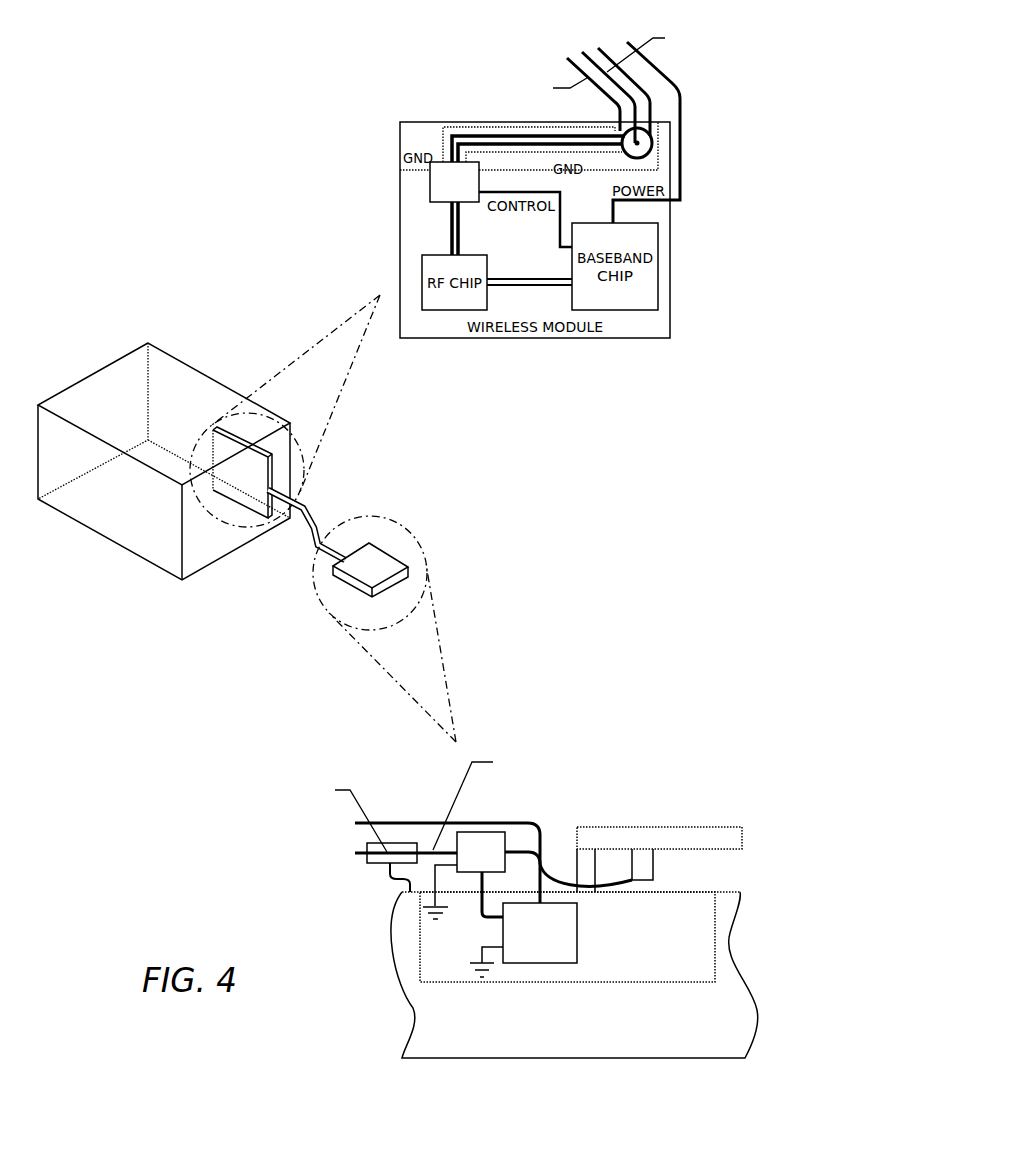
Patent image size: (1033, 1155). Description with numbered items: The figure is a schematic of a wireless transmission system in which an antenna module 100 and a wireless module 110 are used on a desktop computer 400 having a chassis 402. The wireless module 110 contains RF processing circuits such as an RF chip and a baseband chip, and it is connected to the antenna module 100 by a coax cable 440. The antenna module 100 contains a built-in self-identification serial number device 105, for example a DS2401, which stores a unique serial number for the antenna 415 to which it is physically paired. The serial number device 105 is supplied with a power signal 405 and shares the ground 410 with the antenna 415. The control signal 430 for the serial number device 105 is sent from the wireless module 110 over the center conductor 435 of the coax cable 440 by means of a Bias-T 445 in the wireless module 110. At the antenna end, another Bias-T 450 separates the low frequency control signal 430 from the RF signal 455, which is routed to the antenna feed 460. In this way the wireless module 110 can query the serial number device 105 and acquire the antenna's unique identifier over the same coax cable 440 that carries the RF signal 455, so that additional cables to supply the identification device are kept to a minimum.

The desktop computer 400 is at (129, 296).
The chassis 402 is at (98, 523).
The wireless module 110 is at (248, 493).
The coax cable 440 is at (317, 521).
The antenna module 100 is at (382, 562).
The center conductor 435 is at (593, 57).
The Bias-T 445 is at (430, 180).
The RF signal 455 is at (446, 208).
The power signal 405 is at (418, 822).
The Bias-T 450 is at (483, 831).
The antenna 415 is at (658, 827).
The antenna feed 460 is at (590, 890).
The control signal 430 is at (482, 918).
The serial number device 105 is at (577, 948).
The ground 410 is at (568, 982).